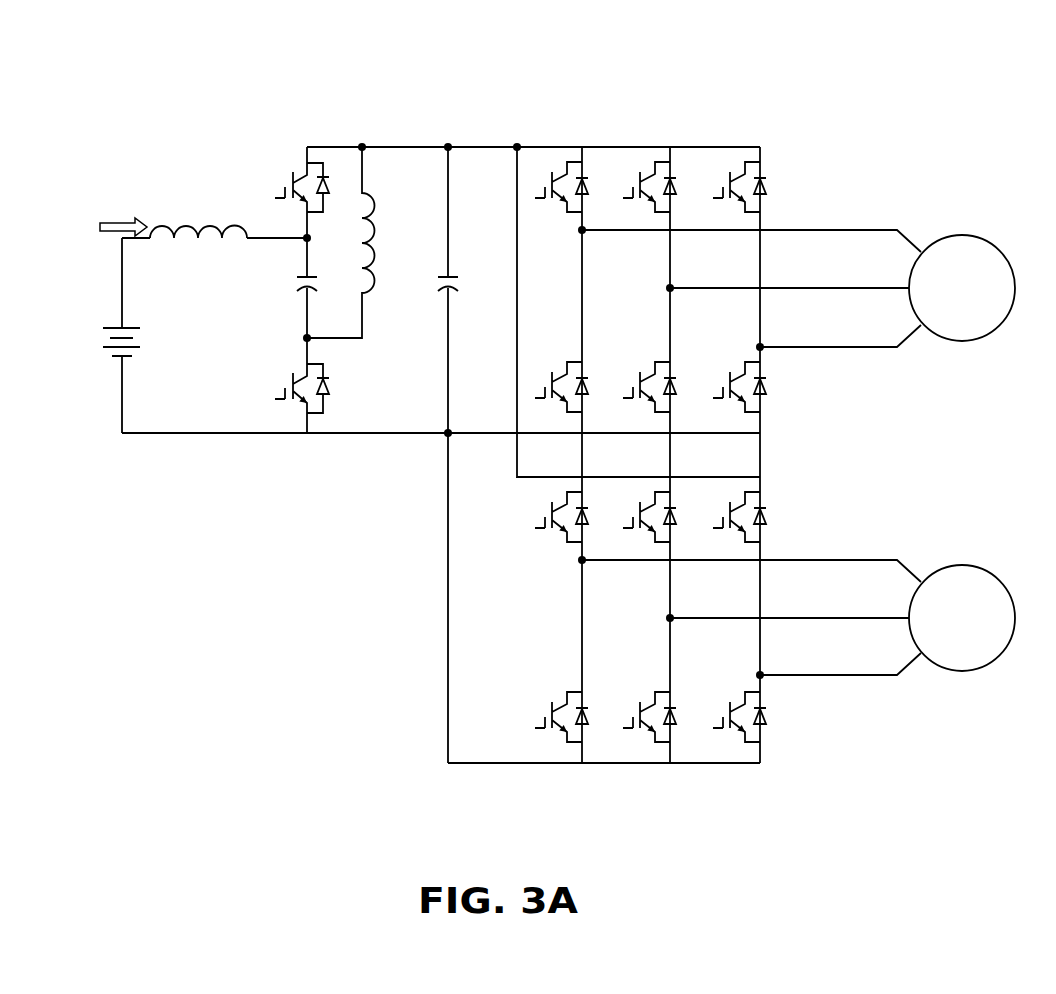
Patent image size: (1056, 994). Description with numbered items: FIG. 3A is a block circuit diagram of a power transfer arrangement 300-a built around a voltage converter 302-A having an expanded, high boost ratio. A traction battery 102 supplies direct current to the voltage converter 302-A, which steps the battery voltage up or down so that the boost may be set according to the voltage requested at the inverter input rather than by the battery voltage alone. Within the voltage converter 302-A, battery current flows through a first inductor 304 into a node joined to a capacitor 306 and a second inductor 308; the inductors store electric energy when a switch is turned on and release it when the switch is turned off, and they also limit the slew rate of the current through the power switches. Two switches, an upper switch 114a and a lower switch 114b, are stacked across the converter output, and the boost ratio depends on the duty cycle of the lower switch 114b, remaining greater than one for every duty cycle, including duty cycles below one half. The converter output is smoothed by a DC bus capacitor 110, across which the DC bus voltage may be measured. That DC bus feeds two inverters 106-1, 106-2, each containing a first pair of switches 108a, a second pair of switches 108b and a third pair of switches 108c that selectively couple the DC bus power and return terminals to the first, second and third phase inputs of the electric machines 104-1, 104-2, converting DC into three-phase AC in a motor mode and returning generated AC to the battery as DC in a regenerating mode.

The electric drive system 300-a is at (954, 111).
The traction battery 102 is at (113, 320).
The voltage converter 302-A is at (150, 207).
The inductor L1 304 is at (199, 250).
The capacitor C2 306 is at (303, 277).
The inductor L2 308 is at (376, 232).
The switch S1 114a is at (284, 184).
The switch S2 114b is at (284, 394).
The DC bus capacitor 110 is at (453, 276).
The first inverter 106-1 is at (586, 83).
The second inverter 106-2 is at (586, 828).
The first pair of switches 108a is at (559, 175).
The second pair of switches 108b is at (647, 175).
The third pair of switches 108c is at (737, 175).
The first motor 104-1 is at (930, 313).
The second motor 104-2 is at (930, 643).